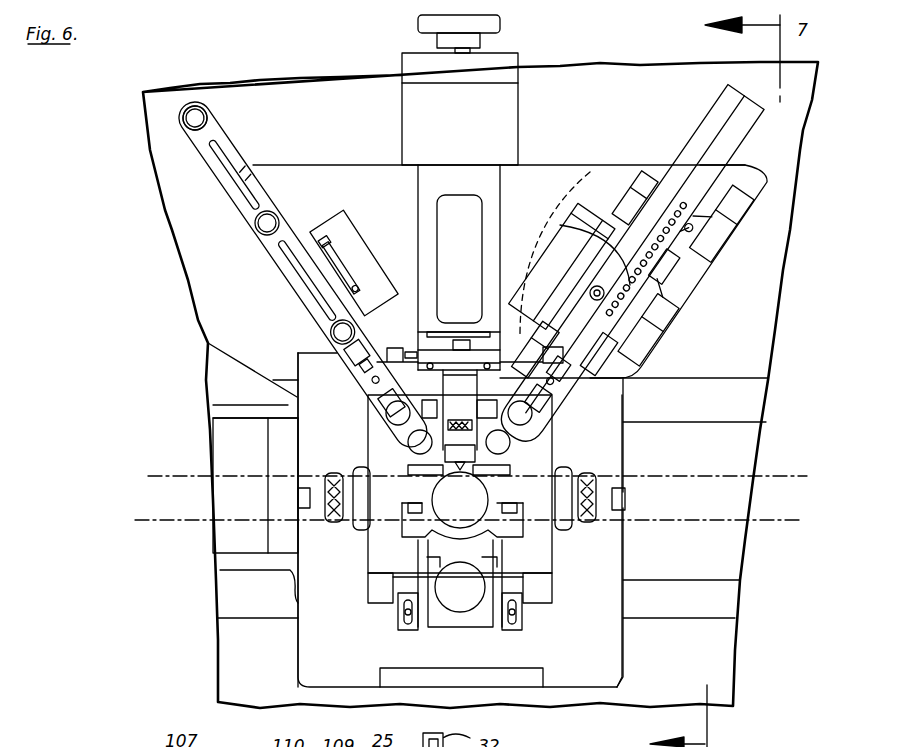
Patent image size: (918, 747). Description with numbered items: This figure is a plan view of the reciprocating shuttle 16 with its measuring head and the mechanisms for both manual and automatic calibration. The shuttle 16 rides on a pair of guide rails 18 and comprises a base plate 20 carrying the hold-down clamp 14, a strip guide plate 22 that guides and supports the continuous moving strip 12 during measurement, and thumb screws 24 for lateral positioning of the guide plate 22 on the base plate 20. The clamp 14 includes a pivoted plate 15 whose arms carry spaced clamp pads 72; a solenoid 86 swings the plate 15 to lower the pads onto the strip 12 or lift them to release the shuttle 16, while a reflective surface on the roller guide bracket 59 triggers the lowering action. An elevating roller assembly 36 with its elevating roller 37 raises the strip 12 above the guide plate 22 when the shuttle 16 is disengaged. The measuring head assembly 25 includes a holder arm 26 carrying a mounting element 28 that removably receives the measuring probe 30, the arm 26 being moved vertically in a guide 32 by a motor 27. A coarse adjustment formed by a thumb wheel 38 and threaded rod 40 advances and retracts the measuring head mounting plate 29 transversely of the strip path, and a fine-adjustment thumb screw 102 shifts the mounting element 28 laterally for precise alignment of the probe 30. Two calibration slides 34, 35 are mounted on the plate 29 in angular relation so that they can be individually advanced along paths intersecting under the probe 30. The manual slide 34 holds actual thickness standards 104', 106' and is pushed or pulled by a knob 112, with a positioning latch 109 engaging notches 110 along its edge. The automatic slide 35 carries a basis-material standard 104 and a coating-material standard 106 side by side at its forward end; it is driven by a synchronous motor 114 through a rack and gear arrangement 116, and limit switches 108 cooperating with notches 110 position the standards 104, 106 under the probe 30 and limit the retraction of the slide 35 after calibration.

The continuous moving strip 12 is at (158, 470).
The hold-down clamp 14 is at (450, 640).
The pivoted plate 15 is at (462, 565).
The reciprocating shuttle 16 is at (284, 168).
The guide rails 18 is at (745, 380).
The base plate 20 is at (310, 637).
The strip guide plate 22 is at (368, 565).
The thumb screws 24 is at (320, 522).
The measuring head assembly 25 is at (393, 250).
The holder arm 26 is at (540, 393).
The motor 27 is at (480, 196).
The mounting element 28 is at (482, 492).
The measuring head mounting plate 29 is at (612, 165).
The measuring probe 30 is at (460, 500).
The guide 32 is at (440, 350).
The manual calibration slide 34 is at (170, 148).
The automatic calibration slide 35 is at (745, 122).
The elevating roller assembly 36 is at (212, 396).
The elevating roller 37 is at (270, 435).
The thumb wheel 38 is at (418, 23).
The threaded rod 40 is at (455, 57).
The roller guide bracket 59 is at (523, 677).
The clamp pads 72 is at (402, 512).
The solenoid 86 is at (460, 587).
The thumb screw 102 is at (447, 386).
The standard 104 is at (546, 439).
The thickness standard 104' is at (370, 442).
The standard 106 is at (557, 413).
The thickness standard 106' is at (359, 412).
The limit switches 108 is at (718, 247).
The positioning latch 109 is at (362, 222).
The notches 110 is at (313, 196).
The knob 112 is at (183, 118).
The synchronous motor 114 is at (545, 235).
The rack and gear arrangement 116 is at (640, 296).